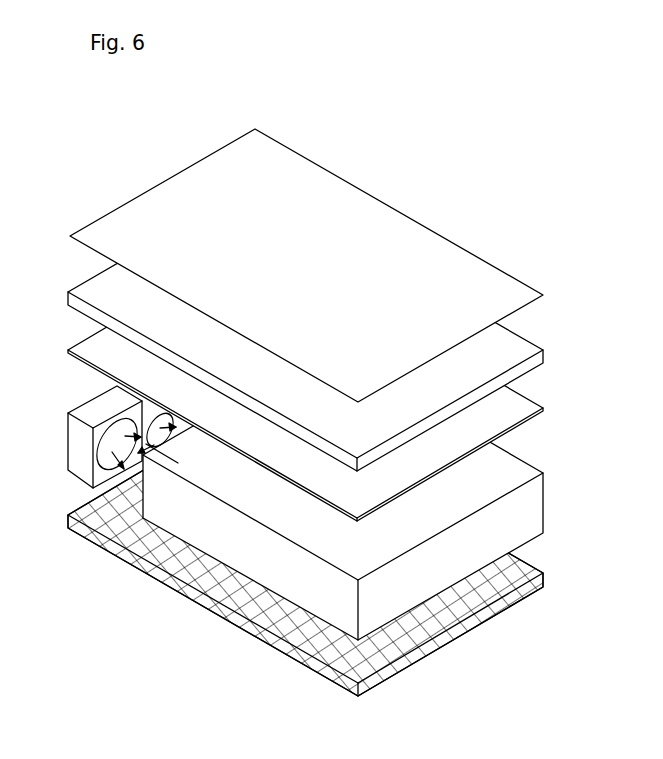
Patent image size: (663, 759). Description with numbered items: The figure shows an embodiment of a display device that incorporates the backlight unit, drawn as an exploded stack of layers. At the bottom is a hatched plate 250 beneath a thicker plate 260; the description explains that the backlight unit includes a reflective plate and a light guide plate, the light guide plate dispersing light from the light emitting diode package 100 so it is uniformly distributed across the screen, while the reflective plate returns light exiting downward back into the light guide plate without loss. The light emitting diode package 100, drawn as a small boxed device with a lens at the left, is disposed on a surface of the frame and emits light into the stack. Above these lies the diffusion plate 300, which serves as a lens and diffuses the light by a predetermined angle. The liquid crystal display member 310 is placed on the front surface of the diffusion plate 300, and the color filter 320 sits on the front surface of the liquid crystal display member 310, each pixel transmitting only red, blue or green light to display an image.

The light emitting diode package 100 is at (93, 469).
The reflective sheet 250 is at (540, 583).
The light guide plate 260 is at (532, 490).
The diffusion plate 300 is at (513, 416).
The liquid crystal display member 310 is at (513, 349).
The color filter 320 is at (514, 288).